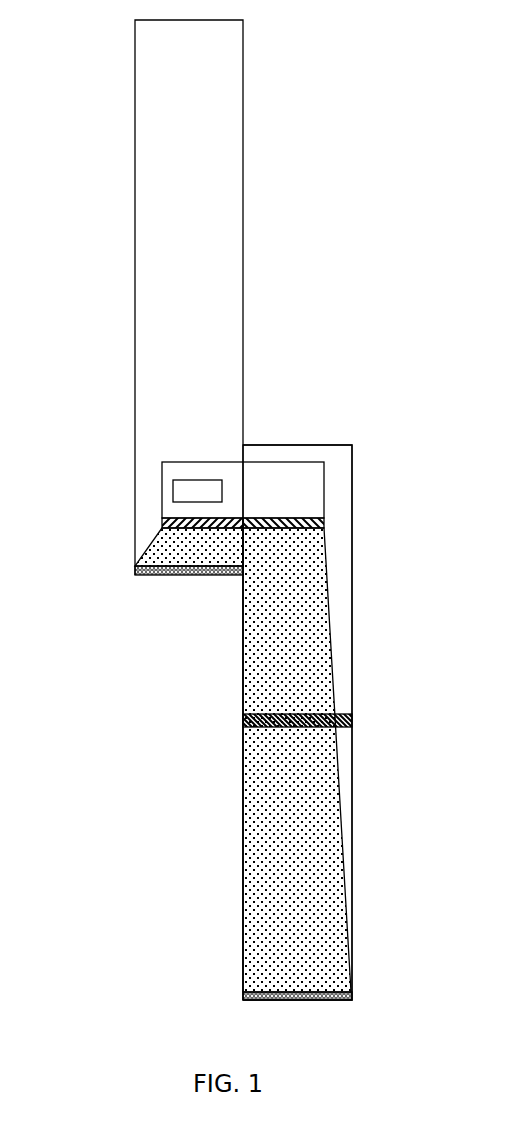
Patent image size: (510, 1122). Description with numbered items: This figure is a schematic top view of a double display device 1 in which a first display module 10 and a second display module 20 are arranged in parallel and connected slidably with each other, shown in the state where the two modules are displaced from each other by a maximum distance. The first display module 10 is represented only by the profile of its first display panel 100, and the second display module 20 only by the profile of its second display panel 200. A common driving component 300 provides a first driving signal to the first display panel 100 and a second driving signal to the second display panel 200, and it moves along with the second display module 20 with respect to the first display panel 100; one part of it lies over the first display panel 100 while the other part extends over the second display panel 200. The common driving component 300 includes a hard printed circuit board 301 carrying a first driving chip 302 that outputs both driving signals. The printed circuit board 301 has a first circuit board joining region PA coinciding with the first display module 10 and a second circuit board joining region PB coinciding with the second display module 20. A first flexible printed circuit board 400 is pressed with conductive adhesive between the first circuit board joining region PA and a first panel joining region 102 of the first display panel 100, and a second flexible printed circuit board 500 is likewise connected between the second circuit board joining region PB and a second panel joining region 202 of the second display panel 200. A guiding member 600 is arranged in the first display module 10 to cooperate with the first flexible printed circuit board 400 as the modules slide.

The double display device 1 is at (128, 906).
The second display module 20 is at (146, 297).
The second display panel 200 is at (135, 316).
The first display module 10 is at (336, 722).
The first display panel 100 is at (352, 752).
The common driving component 300 is at (283, 453).
The printed circuit board 301 is at (162, 490).
The first driving chip 302 is at (197, 491).
The first circuit board joining region PA is at (318, 524).
The second circuit board joining region PB is at (165, 524).
The second flexible printed circuit board 500 is at (150, 553).
The second panel joining region 202 is at (135, 575).
The first flexible printed circuit board 400 is at (330, 902).
The guiding member 600 is at (243, 721).
The first panel joining region 102 is at (243, 996).